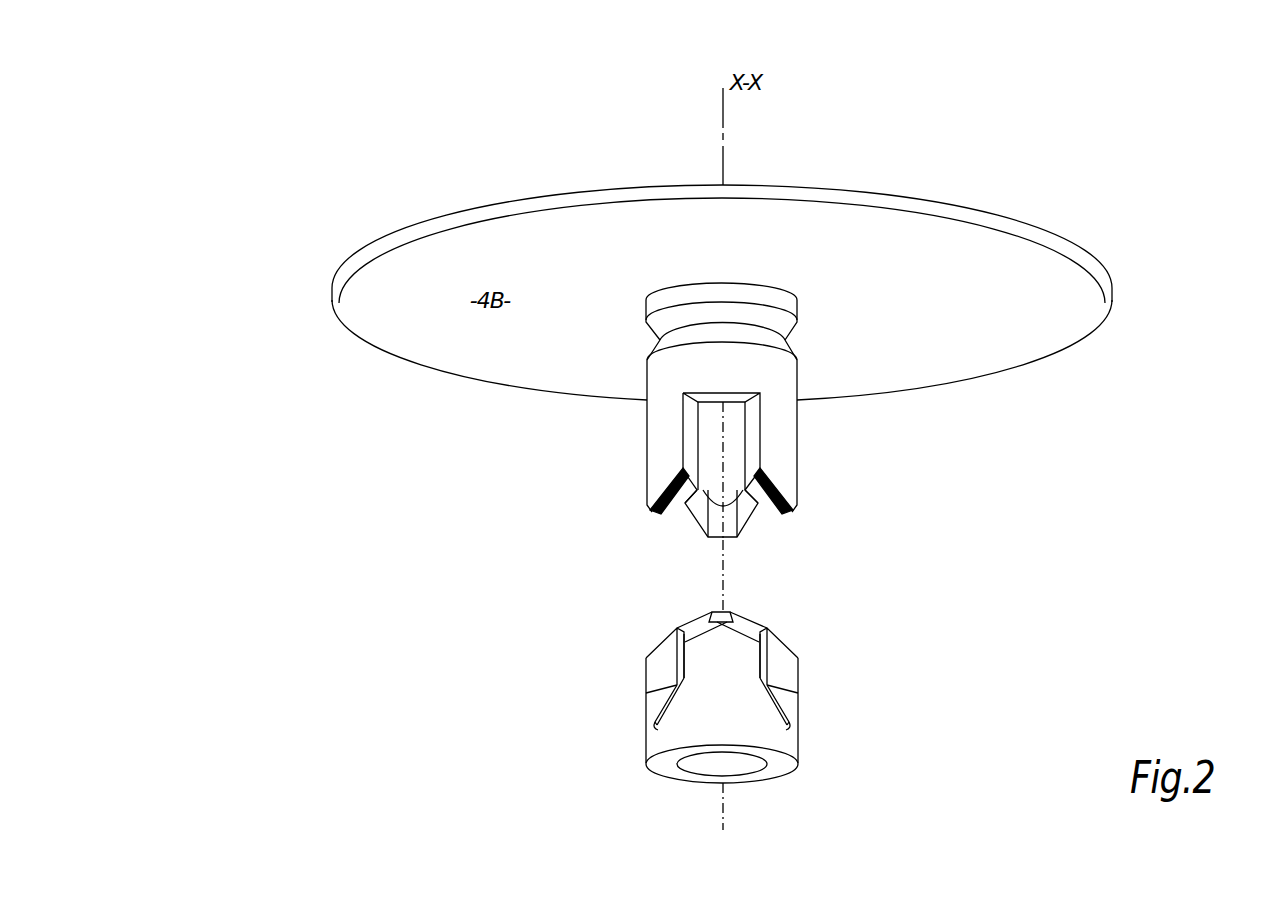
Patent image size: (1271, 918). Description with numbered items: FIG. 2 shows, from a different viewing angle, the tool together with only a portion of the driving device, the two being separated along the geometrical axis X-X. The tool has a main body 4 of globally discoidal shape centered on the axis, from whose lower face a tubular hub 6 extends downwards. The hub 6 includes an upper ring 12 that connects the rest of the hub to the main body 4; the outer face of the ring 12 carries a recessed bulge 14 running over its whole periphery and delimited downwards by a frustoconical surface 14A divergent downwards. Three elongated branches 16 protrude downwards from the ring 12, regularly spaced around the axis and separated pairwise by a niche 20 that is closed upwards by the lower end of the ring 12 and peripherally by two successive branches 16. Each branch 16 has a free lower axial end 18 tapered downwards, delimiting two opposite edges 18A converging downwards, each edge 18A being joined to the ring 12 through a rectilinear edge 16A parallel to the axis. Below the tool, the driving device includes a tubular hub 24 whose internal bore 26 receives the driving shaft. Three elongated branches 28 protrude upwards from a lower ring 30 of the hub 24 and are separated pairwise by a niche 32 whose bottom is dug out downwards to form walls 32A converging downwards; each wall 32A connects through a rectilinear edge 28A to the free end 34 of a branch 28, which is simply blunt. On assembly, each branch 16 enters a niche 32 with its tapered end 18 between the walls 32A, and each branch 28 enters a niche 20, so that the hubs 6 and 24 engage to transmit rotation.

The main body 4 is at (322, 292).
The hub 6 is at (700, 369).
The upper ring 12 is at (790, 308).
The recessed bulge 14 is at (650, 349).
The frustoconical surface 14A is at (800, 347).
The elongated branches 16 is at (782, 426).
The rectilinear edge 16A is at (748, 412).
The lower axial end 18 is at (782, 478).
The edges 18A is at (700, 510).
The niche 20 is at (715, 397).
The hub 24 is at (730, 721).
The internal bore 26 is at (748, 765).
The elongated branches 28 is at (723, 657).
The rectilinear edge 28A is at (684, 662).
The lower ring 30 is at (790, 740).
The niche 32 is at (660, 728).
The walls 32A is at (646, 700).
The free end 34 is at (725, 612).